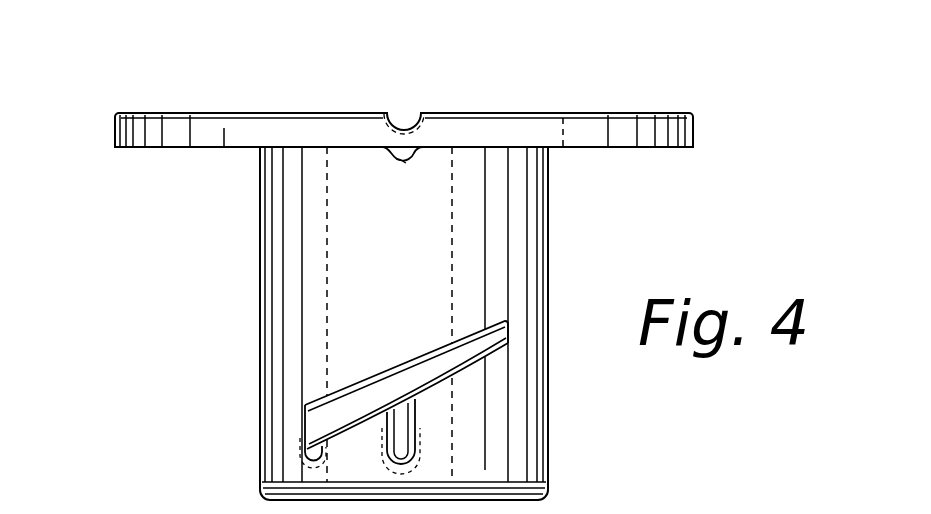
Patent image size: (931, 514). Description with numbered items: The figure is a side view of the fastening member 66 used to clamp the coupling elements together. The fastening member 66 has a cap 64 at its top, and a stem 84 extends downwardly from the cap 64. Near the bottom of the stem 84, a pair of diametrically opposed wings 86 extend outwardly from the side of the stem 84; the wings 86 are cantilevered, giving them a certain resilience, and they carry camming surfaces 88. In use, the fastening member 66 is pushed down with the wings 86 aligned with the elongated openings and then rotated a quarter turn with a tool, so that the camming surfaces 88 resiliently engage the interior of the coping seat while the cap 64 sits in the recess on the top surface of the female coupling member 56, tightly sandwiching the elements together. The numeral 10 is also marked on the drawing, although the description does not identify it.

The cap 64 is at (580, 123).
The notch 10 is at (399, 162).
The fastening member 66 is at (197, 361).
The stem 84 is at (525, 418).
The female coupling member 56 is at (515, 495).
The wings 86 is at (328, 410).
The camming surfaces 88 is at (442, 348).